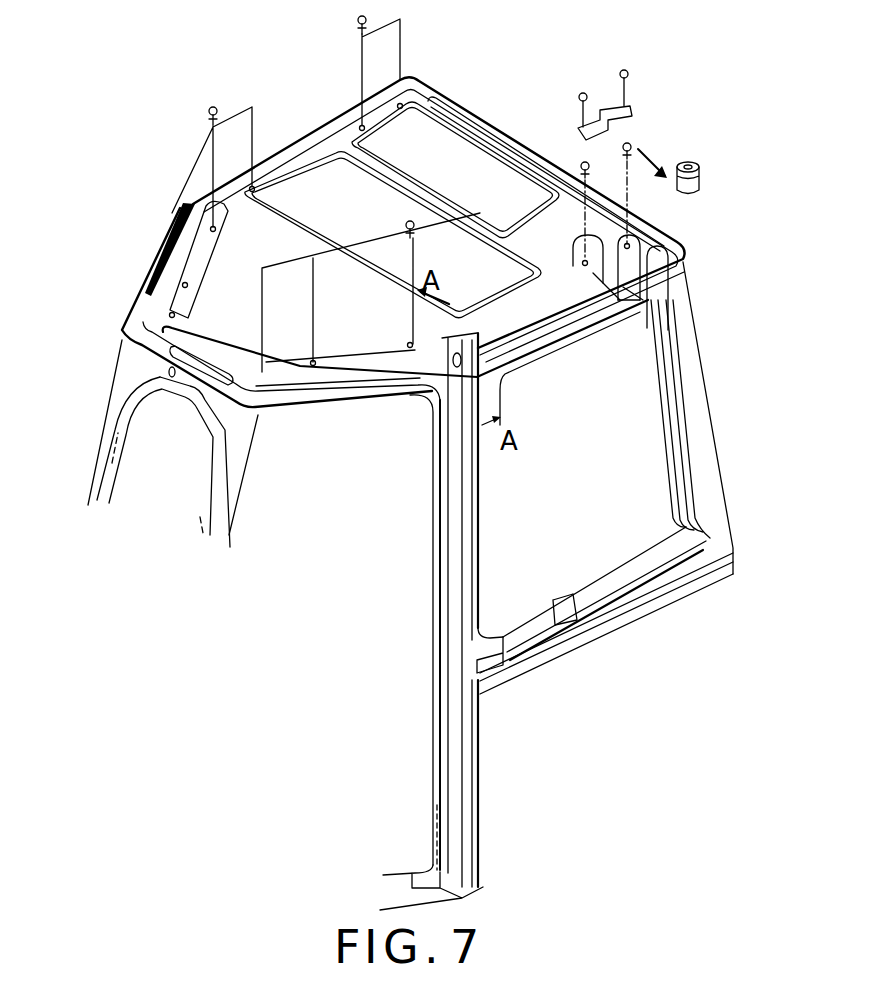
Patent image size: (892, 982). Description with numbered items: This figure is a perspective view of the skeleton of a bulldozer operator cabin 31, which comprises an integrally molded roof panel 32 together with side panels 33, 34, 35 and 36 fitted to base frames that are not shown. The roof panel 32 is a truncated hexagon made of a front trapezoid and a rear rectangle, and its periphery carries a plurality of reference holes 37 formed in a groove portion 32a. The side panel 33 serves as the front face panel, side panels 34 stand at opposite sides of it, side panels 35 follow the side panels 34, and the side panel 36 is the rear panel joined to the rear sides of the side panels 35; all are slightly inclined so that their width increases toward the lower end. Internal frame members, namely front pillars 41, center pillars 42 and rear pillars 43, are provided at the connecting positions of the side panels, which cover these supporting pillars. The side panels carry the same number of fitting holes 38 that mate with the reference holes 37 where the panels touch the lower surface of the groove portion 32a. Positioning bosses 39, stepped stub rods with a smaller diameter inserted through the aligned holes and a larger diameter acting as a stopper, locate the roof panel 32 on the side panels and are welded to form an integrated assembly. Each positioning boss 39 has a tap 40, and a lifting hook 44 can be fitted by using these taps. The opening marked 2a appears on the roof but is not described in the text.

The operator cabin 31 is at (497, 116).
The roof panel 32 is at (322, 131).
The roof opening 2a is at (290, 172).
The groove portion 32a is at (200, 255).
The front face panel 33 is at (113, 430).
The side panel 34 is at (423, 503).
The side panel 35 is at (645, 420).
The rear panel 36 is at (533, 151).
The reference hole 37 is at (255, 190).
The fitting hole 38 is at (589, 266).
The positioning boss 39 is at (357, 24).
The tap 40 is at (702, 182).
The front pillar 41 is at (238, 484).
The center pillar 42 is at (455, 570).
The rear pillar 43 is at (688, 362).
The lifting hook 44 is at (610, 108).